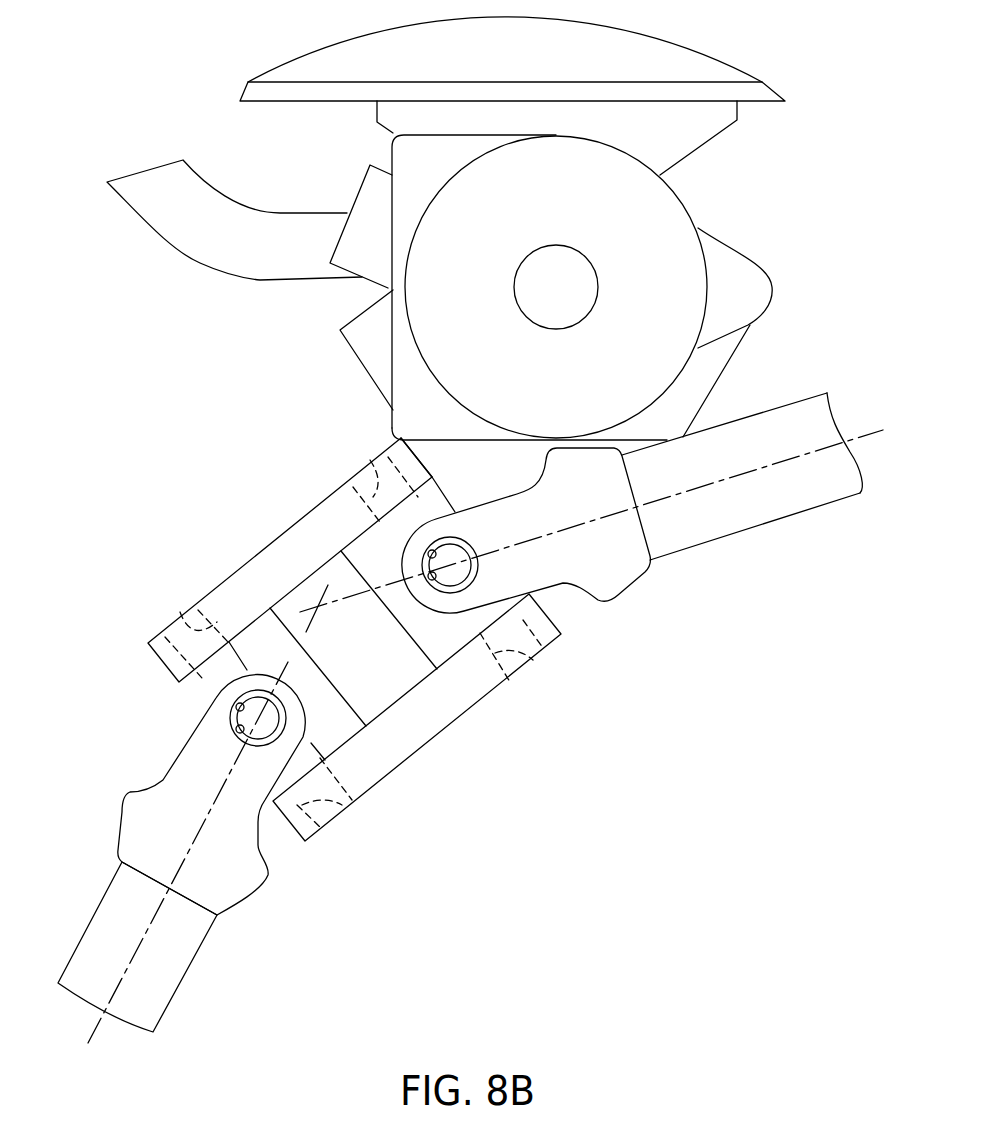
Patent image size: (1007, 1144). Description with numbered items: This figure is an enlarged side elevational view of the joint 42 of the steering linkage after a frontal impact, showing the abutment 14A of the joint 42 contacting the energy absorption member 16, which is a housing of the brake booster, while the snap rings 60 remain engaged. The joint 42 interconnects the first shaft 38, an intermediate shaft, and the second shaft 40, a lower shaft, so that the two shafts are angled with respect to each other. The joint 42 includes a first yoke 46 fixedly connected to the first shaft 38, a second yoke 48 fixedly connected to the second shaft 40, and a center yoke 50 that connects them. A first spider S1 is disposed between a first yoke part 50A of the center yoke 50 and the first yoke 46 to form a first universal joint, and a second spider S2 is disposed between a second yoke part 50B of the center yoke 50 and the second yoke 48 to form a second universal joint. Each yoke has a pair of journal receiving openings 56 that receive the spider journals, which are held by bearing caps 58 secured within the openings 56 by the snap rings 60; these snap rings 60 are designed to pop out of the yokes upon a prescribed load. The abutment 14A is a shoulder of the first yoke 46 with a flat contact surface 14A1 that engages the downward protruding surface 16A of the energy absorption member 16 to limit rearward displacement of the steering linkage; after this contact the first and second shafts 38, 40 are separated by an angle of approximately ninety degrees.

The energy absorption member 16 is at (725, 198).
The downward protruding surface 16A is at (390, 438).
The abutment 14A is at (334, 649).
The contact surface 14A1 is at (423, 450).
The joint 42 is at (277, 540).
The center yoke 50 is at (448, 733).
The first yoke part 50A is at (405, 643).
The second yoke part 50B is at (357, 705).
The journal receiving openings 56 is at (370, 460).
The bearing caps 58 is at (458, 572).
The snap rings 60 is at (458, 537).
The first spider S1 is at (433, 503).
The second spider S2 is at (210, 692).
The first yoke 46 is at (623, 590).
The second yoke 48 is at (120, 818).
The first shaft 38 is at (745, 520).
The second shaft 40 is at (100, 907).